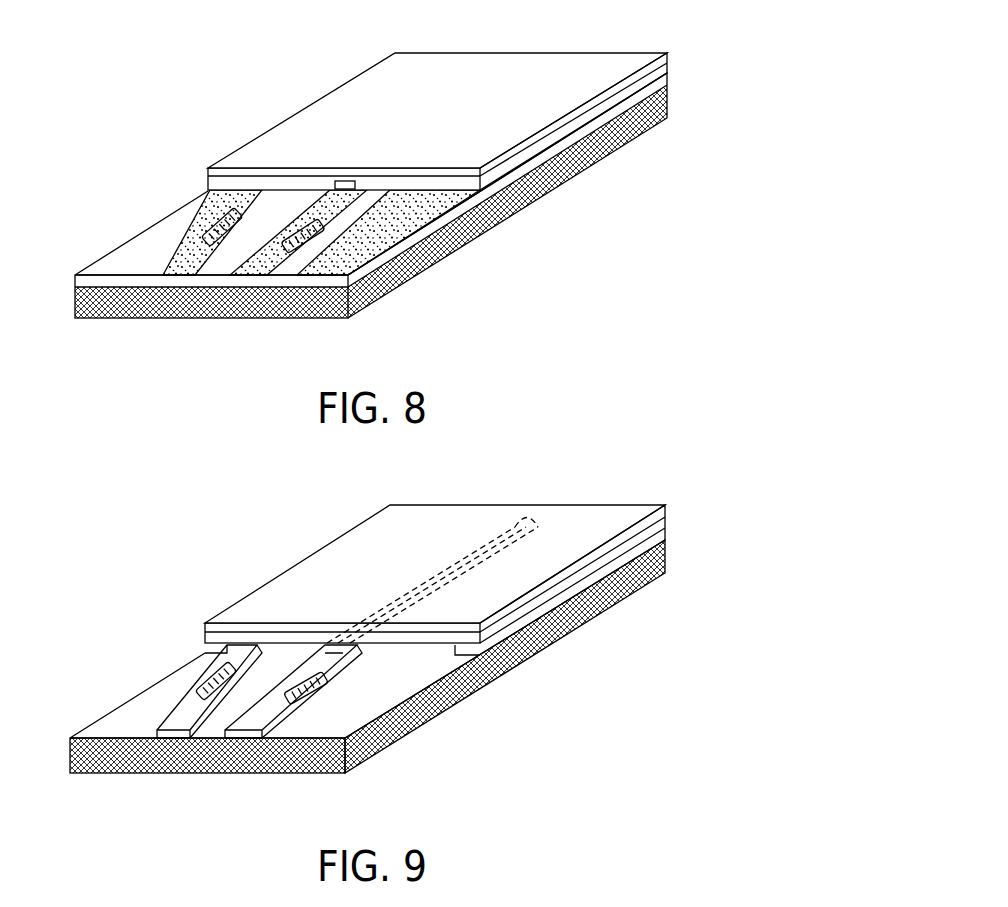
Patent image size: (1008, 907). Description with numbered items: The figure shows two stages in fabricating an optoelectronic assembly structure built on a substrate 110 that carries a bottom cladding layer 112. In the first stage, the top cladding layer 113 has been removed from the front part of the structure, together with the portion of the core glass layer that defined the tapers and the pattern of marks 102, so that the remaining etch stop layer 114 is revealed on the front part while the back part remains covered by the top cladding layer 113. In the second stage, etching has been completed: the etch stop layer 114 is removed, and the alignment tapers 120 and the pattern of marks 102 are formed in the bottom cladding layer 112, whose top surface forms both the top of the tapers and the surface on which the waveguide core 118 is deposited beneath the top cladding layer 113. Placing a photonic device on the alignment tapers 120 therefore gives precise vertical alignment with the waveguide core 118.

In FIG. 8, the pattern of marks 102 is at (215, 218).
In FIG. 9, the pattern of marks 102 is at (208, 665).
In FIG. 8, the substrate 110 is at (352, 195).
In FIG. 9, the substrate 110 is at (367, 656).
In FIG. 8, the bottom cladding layer 112 is at (123, 260).
In FIG. 9, the bottom cladding layer 112 is at (503, 668).
In FIG. 8, the top cladding layer 113 is at (607, 63).
In FIG. 8, the etch stop layer 114 is at (365, 218).
In FIG. 9, the waveguide core 118 is at (397, 602).
In FIG. 9, the alignment tapers 120 is at (173, 717).